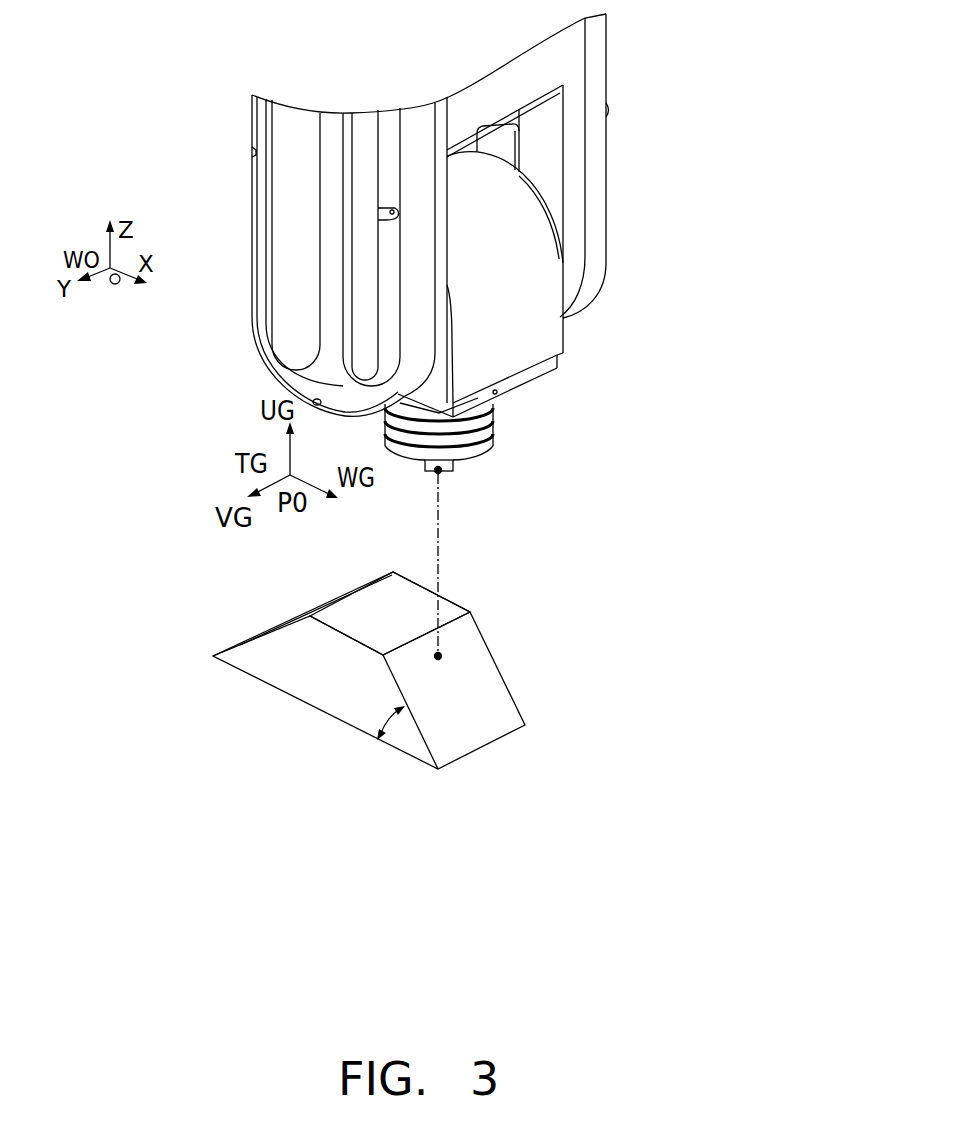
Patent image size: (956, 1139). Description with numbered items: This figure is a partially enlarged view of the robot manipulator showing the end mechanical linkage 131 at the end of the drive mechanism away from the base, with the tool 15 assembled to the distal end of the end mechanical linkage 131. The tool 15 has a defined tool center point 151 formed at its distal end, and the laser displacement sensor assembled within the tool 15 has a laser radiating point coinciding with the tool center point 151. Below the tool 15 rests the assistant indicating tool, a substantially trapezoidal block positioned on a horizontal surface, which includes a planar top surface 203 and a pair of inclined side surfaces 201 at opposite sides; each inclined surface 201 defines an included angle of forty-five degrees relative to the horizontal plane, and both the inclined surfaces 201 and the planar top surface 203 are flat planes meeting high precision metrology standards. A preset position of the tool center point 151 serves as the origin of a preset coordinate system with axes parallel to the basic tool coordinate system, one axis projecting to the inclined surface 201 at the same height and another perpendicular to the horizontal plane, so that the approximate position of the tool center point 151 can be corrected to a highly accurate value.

The end mechanical linkage 131 is at (533, 332).
The tool 15 is at (477, 413).
The tool center point (TCP) 151 is at (441, 472).
The inclined side surface 201 is at (487, 685).
The planar top surface 203 is at (366, 610).